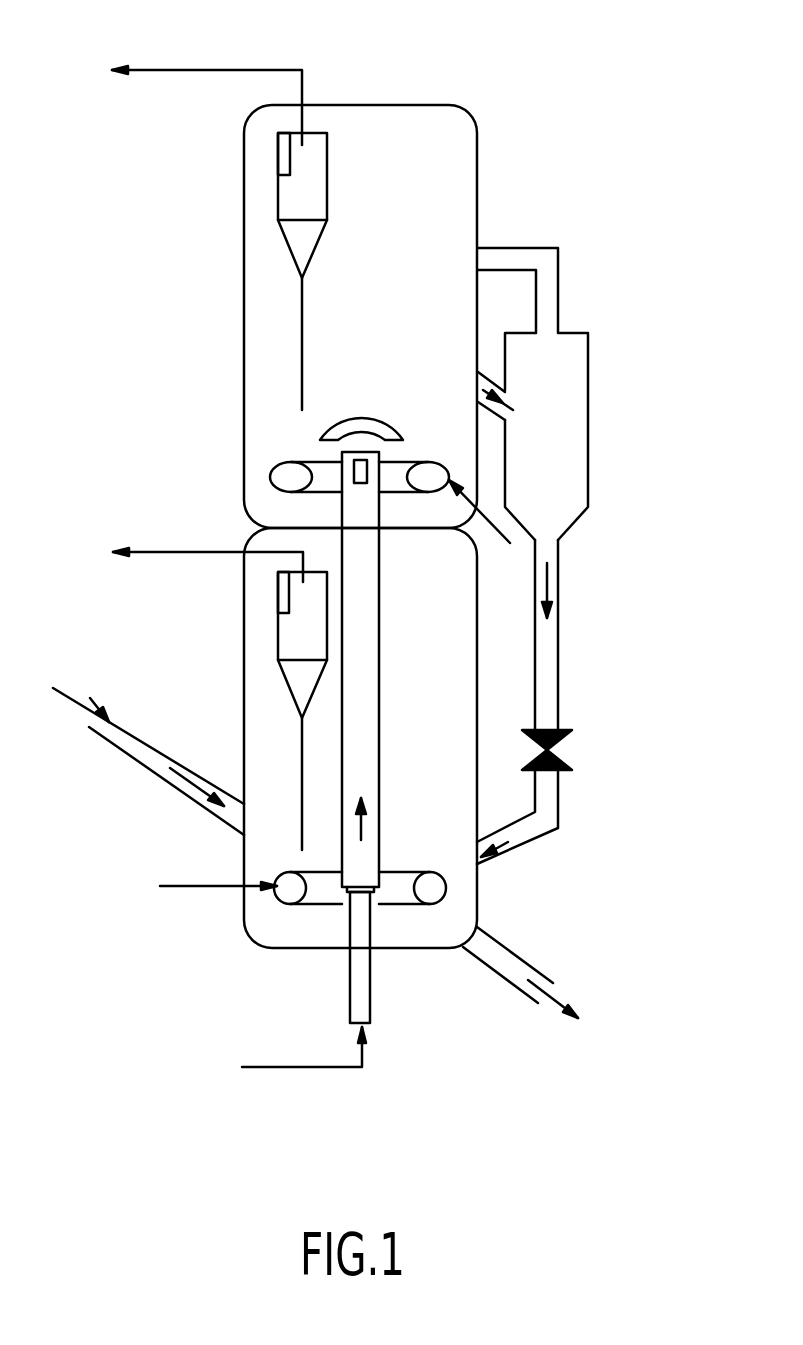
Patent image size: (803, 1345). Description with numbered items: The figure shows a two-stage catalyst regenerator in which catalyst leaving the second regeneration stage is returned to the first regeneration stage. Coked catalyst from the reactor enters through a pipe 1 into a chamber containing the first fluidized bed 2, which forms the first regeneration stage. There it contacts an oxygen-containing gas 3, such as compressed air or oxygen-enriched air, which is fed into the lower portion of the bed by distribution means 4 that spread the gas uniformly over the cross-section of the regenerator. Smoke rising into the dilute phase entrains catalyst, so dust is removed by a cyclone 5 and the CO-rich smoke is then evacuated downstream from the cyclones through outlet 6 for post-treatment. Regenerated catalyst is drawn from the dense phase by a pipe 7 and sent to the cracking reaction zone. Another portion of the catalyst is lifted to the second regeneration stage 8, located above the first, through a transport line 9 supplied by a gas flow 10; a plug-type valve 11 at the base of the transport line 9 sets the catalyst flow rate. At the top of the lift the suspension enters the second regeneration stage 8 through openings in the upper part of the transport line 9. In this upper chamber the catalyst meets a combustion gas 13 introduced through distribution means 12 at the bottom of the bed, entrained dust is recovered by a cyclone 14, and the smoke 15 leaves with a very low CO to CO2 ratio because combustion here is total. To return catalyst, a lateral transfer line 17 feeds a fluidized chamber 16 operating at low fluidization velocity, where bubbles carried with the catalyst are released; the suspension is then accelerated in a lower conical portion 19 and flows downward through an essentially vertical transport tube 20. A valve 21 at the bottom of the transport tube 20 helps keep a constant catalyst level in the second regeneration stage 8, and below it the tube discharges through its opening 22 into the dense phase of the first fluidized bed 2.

The pipe 1 is at (150, 762).
The first fluidized bed 2 is at (268, 690).
The gas 3 is at (188, 887).
The gas distribution means 4 is at (333, 893).
The single-stage cycloning 5 is at (305, 635).
The smoke evacuation downstream from the cyclones 6 is at (163, 552).
The pipe 7 is at (532, 984).
The second regeneration stage 8 is at (255, 258).
The transport line 9 is at (360, 660).
The gas flow 10 is at (302, 1070).
The plug-type valve 11 is at (362, 895).
The gas distribution means 12 is at (290, 477).
The combustion gas 13 is at (510, 545).
The single-stage cycloning 14 is at (307, 182).
The smoke 15 is at (168, 67).
The fluidized chamber 16 is at (568, 410).
The lateral transfer line 17 is at (493, 383).
The lower conical portion 19 is at (565, 515).
The transport tube 20 is at (547, 627).
The valve 21 is at (553, 752).
The opening 22 is at (478, 866).